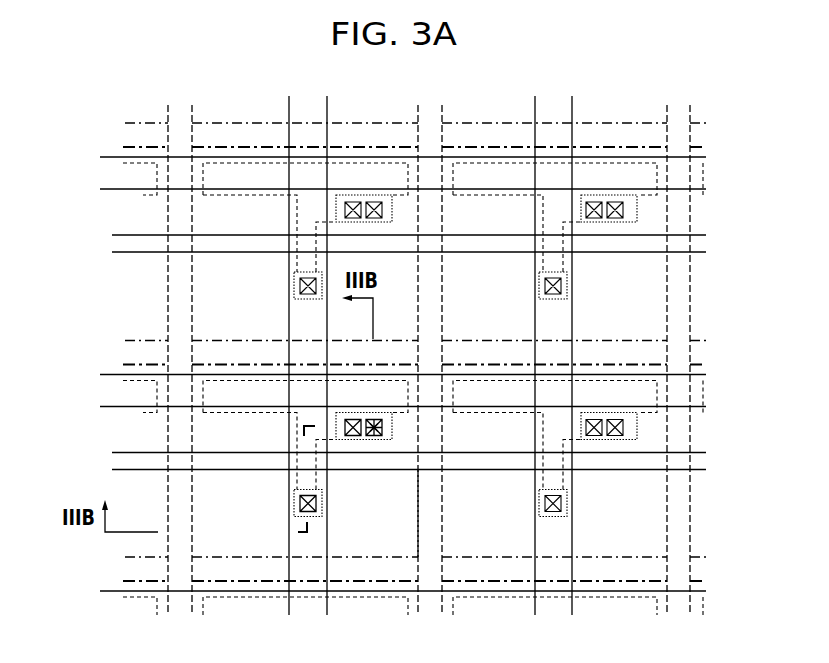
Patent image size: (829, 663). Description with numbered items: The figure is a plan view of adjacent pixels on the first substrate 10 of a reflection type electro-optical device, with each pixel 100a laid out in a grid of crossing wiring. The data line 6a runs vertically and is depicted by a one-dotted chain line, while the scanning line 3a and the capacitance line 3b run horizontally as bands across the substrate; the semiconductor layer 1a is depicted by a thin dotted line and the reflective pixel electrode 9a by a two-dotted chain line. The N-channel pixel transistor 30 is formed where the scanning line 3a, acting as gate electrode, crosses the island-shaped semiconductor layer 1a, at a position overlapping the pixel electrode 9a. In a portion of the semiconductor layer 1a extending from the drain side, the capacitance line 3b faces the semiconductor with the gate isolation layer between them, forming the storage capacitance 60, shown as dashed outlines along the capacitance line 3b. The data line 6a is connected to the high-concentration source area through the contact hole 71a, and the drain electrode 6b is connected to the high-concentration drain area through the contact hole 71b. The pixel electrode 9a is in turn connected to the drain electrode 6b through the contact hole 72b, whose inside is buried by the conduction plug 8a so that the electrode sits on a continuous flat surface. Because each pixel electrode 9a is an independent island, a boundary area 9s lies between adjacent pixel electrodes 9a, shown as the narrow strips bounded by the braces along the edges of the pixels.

The first substrate 10 is at (640, 88).
The boundary area 9s is at (710, 123).
The data line 6a is at (327, 96).
The capacitance line 3b is at (97, 157).
The scanning line 3a is at (112, 235).
The storage capacitance 60 is at (250, 384).
The drain electrode 6b is at (390, 428).
The contact hole 71b is at (352, 437).
The contact hole 72b is at (378, 440).
The plug 8a is at (378, 419).
The contact hole 71a is at (317, 503).
The semiconductor layer 1a is at (290, 479).
The pixel transistor 30 is at (368, 512).
The pixel electrode 9a is at (420, 498).
The pixel 100a is at (247, 533).